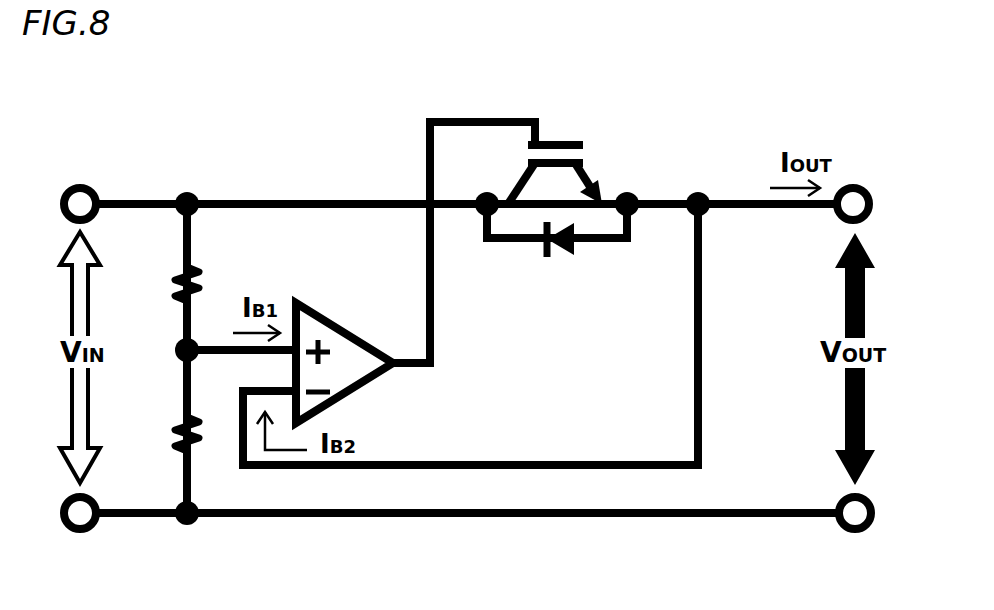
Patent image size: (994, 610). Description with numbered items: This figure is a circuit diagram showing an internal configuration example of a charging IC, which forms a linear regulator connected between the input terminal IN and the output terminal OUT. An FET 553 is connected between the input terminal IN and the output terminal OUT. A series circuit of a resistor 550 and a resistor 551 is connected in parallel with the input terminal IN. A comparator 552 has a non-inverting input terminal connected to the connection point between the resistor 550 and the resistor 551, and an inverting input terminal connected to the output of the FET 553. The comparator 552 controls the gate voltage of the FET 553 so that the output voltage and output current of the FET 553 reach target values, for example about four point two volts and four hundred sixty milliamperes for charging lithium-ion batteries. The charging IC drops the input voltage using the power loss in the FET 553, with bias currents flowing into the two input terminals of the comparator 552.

The resistor 550 is at (193, 267).
The resistor 551 is at (192, 448).
The comparator 552 is at (356, 337).
The FET 553 is at (575, 138).